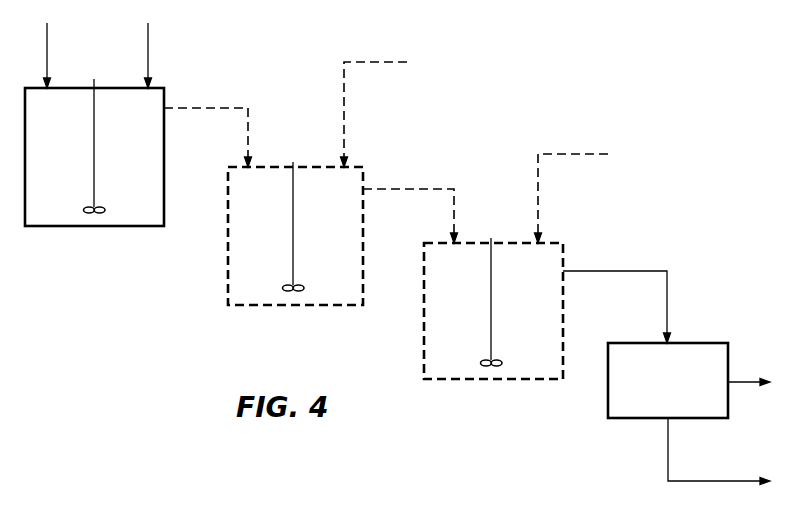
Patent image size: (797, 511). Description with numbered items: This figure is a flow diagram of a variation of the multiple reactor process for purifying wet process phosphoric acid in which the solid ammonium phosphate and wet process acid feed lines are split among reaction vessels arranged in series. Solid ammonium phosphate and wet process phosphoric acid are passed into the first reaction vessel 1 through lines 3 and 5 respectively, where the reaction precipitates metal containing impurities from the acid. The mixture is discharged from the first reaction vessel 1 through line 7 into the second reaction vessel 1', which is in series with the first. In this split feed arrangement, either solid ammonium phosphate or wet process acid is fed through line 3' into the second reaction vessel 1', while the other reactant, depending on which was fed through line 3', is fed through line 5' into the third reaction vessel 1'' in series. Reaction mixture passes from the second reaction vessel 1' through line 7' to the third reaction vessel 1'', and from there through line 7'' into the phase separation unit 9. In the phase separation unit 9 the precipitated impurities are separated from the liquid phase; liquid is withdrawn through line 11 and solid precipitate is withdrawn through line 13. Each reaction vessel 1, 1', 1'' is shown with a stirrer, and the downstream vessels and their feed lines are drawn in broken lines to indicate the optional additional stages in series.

The reaction vessel 1 is at (94, 177).
The second reaction vessel 1' is at (275, 239).
The third reaction vessel 1'' is at (470, 313).
The line 3 is at (160, 55).
The line 3' is at (354, 105).
The line 5 is at (58, 55).
The line 5' is at (550, 194).
The line 7 is at (208, 115).
The line 7' is at (410, 194).
The line 7'' is at (617, 285).
The phase separation unit 9 is at (677, 387).
The line 11 is at (725, 480).
The line 13 is at (740, 381).